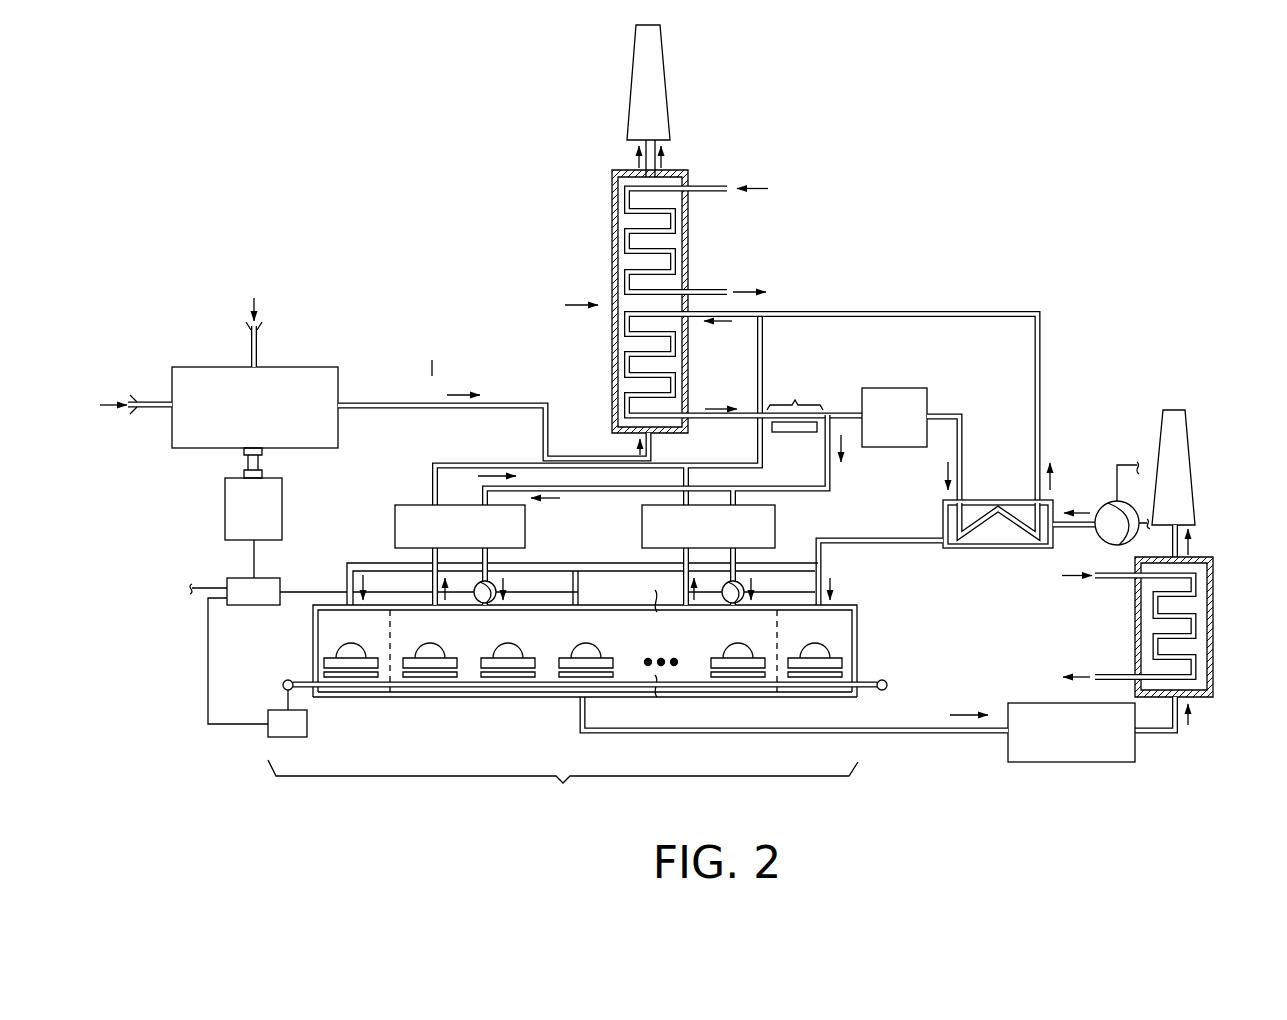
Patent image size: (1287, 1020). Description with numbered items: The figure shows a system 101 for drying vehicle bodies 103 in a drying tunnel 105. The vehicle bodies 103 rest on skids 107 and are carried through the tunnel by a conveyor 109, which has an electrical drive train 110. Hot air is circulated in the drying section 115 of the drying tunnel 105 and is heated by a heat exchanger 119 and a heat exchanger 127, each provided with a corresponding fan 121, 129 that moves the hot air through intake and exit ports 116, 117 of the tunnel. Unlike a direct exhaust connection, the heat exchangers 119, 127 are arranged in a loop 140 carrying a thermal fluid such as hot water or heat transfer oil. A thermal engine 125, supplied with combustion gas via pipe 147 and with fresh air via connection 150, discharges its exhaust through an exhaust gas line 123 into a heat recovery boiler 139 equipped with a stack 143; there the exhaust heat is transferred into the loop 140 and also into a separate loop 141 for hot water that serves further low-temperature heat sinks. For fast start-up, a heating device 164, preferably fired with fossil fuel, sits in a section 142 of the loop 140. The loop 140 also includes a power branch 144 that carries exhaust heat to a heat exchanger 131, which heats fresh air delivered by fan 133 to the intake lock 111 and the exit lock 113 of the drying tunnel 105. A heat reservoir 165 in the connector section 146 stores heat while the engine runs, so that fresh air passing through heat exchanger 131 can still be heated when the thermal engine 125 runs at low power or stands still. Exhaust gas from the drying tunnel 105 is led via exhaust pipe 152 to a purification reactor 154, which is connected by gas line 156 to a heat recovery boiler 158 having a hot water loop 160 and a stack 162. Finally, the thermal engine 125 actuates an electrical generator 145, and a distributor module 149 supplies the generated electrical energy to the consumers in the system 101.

The system 101 is at (322, 198).
The vehicle bodies 103 is at (347, 652).
The drying tunnel 105 is at (563, 786).
The skids 107 is at (362, 672).
The conveyor 109 is at (881, 679).
The electrical drive train 110 is at (266, 730).
The intake lock 111 is at (332, 615).
The exit lock 113 is at (842, 612).
The drying section 115 is at (503, 699).
The intake ports 116 is at (488, 604).
The exit ports 117 is at (438, 607).
The heat exchanger 119 is at (395, 525).
The fan 121 is at (498, 590).
The exhaust gas line 123 is at (513, 400).
The thermal engine 125 is at (203, 366).
The heat exchanger 127 is at (642, 524).
The fan 129 is at (746, 590).
The heat exchanger 131 is at (985, 550).
The fan 133 is at (1102, 508).
The heat recovery boiler 139 is at (612, 238).
The loop 140 is at (706, 292).
The loop for hot water 141 is at (705, 185).
The section 142 is at (795, 400).
The stack 143 is at (672, 85).
The power branch 144 is at (1041, 325).
The electrical generator 145 is at (224, 505).
The connector section 146 is at (858, 420).
The pipe 147 is at (148, 400).
The distributor module 149 is at (250, 607).
The connection 150 is at (262, 340).
The exhaust pipe 152 is at (930, 736).
The purification reactor 154 is at (1030, 765).
The gas line 156 is at (1158, 738).
The heat recovery boiler 158 is at (1214, 629).
The hot water loop 160 is at (1107, 580).
The stack 162 is at (1196, 468).
The heating device 164 is at (800, 432).
The heat reservoir 165 is at (893, 387).